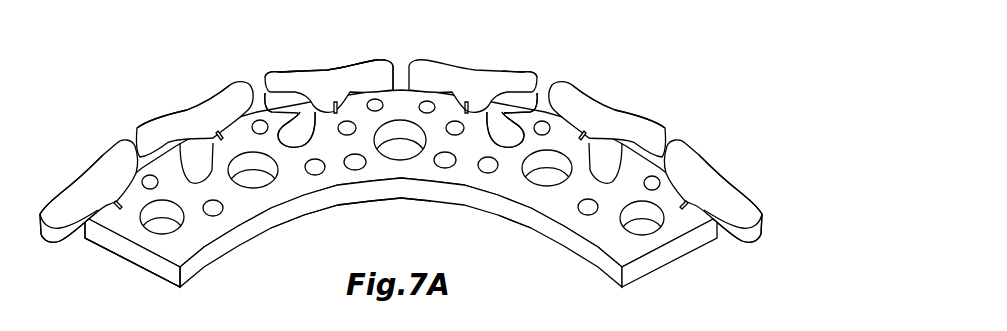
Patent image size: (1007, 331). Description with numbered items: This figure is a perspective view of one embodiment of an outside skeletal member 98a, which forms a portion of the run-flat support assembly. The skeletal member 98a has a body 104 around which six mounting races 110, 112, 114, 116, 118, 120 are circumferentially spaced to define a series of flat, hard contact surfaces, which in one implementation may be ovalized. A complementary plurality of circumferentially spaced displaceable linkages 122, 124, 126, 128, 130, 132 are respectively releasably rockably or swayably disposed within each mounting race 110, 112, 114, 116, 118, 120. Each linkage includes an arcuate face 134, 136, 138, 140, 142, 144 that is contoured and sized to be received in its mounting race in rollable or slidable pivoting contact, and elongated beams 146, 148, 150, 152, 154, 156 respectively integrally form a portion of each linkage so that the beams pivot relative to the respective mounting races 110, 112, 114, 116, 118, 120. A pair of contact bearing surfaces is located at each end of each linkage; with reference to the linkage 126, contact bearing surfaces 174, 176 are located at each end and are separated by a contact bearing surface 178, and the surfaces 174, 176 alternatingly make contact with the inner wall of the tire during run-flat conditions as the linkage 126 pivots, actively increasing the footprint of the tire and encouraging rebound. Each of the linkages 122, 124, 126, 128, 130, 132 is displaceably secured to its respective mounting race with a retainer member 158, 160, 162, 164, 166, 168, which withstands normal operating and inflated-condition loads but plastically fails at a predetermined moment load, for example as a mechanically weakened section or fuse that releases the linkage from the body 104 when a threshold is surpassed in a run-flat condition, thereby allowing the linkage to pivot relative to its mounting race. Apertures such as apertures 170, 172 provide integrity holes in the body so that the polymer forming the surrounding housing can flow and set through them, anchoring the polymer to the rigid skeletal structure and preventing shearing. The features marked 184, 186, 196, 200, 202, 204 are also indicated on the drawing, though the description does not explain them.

The outside skeletal member 98a is at (632, 100).
The body 104 is at (168, 286).
The mounting race 110 is at (113, 210).
The mounting race 112 is at (250, 175).
The mounting race 114 is at (371, 108).
The mounting race 116 is at (490, 112).
The mounting race 118 is at (585, 205).
The mounting race 120 is at (692, 213).
The displaceable linkage 122 is at (112, 138).
The displaceable linkage 124 is at (149, 116).
The displaceable linkage 126 is at (275, 68).
The displaceable linkage 128 is at (433, 62).
The displaceable linkage 130 is at (569, 82).
The displaceable linkage 132 is at (690, 137).
The arcuate face 134 is at (178, 226).
The arcuate face 136 is at (215, 208).
The arcuate face 138 is at (292, 155).
The arcuate face 140 is at (427, 110).
The arcuate face 142 is at (537, 180).
The arcuate face 144 is at (626, 226).
The elongated beam 146 is at (100, 160).
The elongated beam 148 is at (193, 110).
The elongated beam 150 is at (320, 70).
The elongated beam 152 is at (478, 105).
The elongated beam 154 is at (611, 107).
The elongated beam 156 is at (703, 158).
The retainer member 158 is at (122, 208).
The retainer member 160 is at (220, 145).
The retainer member 162 is at (337, 114).
The retainer member 164 is at (470, 118).
The retainer member 166 is at (565, 140).
The retainer member 168 is at (680, 210).
The aperture 170 is at (150, 205).
The aperture 172 is at (398, 127).
The contact bearing surface 174 is at (265, 76).
The contact bearing surface 176 is at (385, 61).
The contact bearing surface 178 is at (340, 68).
The plate bottom 184 is at (164, 284).
The plate edge 186 is at (411, 330).
The plate edge 196 is at (368, 330).
The plate edge 200 is at (330, 330).
The plate edge 202 is at (290, 330).
The plate edge 204 is at (511, 330).